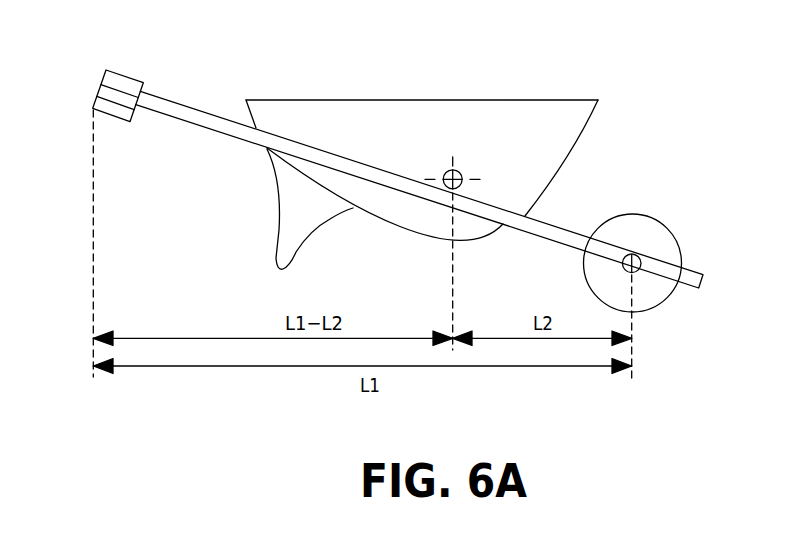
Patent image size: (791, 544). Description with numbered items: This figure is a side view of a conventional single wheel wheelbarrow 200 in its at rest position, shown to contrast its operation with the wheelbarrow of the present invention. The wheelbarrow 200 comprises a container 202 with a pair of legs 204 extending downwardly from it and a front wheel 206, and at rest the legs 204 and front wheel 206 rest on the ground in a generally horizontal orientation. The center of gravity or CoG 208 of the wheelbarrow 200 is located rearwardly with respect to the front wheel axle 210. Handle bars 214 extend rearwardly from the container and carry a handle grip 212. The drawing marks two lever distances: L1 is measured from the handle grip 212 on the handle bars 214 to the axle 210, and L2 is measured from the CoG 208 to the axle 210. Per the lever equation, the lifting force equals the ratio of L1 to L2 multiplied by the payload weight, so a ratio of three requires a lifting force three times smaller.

The wheelbarrow 200 is at (605, 93).
The container 202 is at (583, 137).
The legs 204 is at (277, 233).
The front wheel 206 is at (680, 246).
The center of gravity (CoG) 208 is at (444, 173).
The front wheel axle 210 is at (640, 271).
The handle grip 212 is at (112, 70).
The handle bars 214 is at (160, 108).